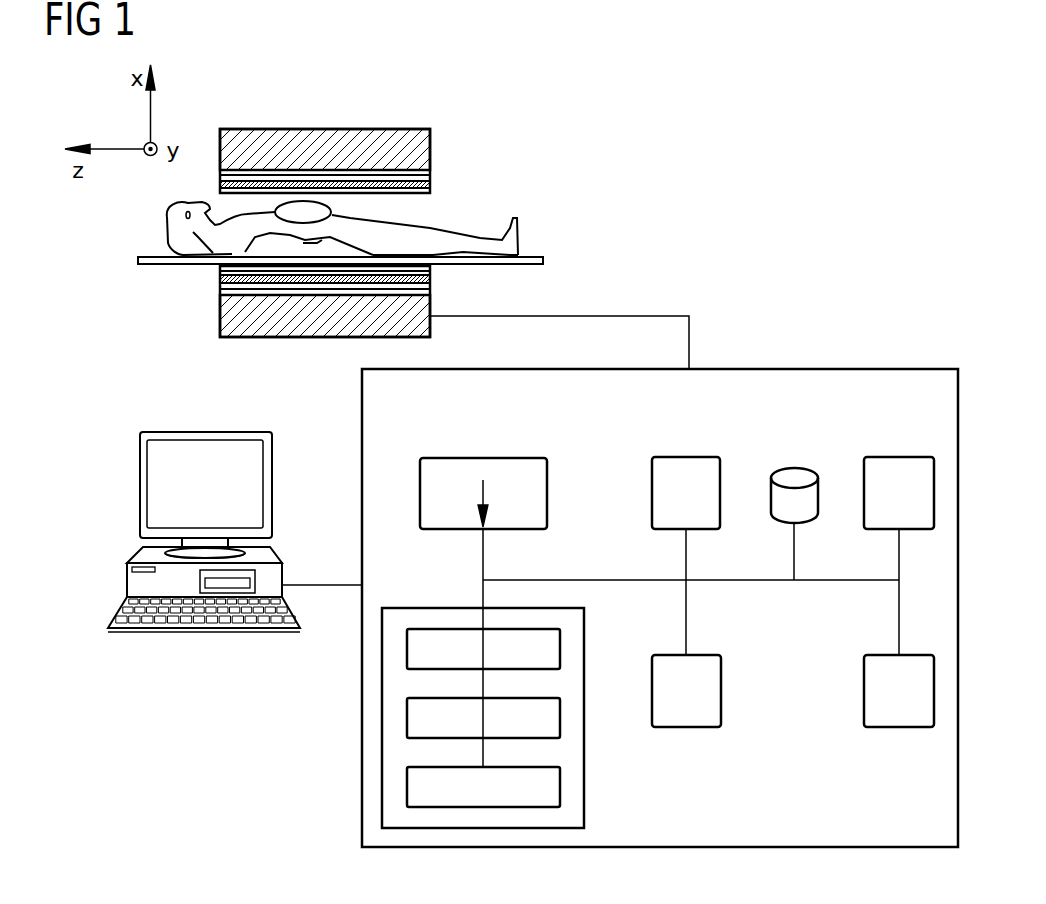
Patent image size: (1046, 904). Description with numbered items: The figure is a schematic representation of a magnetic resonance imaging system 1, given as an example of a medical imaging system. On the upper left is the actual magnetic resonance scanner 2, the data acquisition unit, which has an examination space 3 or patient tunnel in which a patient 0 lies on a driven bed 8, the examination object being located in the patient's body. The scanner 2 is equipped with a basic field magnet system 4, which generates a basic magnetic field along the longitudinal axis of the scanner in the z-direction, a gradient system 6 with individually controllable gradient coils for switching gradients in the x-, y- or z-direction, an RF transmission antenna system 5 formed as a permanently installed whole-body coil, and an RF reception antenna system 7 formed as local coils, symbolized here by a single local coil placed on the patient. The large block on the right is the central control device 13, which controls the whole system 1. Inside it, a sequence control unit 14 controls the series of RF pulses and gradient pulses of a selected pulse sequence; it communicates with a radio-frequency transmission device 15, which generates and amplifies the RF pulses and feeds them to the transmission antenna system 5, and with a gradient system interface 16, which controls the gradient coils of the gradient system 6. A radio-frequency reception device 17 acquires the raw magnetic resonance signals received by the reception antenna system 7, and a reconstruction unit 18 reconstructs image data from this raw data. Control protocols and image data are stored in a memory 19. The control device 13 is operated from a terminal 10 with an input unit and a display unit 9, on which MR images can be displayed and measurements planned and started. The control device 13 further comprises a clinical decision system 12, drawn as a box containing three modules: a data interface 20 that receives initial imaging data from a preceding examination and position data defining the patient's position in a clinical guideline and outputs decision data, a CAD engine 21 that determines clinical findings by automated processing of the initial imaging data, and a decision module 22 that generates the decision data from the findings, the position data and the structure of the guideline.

The magnetic resonance imaging system 1 is at (833, 89).
The magnetic resonance scanner 2 is at (368, 138).
The examination space 3 is at (422, 213).
The basic field magnet system 4 is at (225, 316).
The RF transmission antenna system 5 is at (222, 187).
The gradient system 6 is at (430, 175).
The RF reception antenna system 7 is at (302, 212).
The driven bed 8 is at (543, 261).
The patient 0 is at (517, 243).
The display unit 9 is at (205, 432).
The terminal 10 is at (203, 633).
The clinical decision system 12 is at (435, 607).
The central control device 13 is at (808, 368).
The sequence control unit 14 is at (483, 458).
The radio-frequency transmission device 15 is at (685, 457).
The gradient system interface 16 is at (721, 692).
The radio-frequency reception device 17 is at (899, 457).
The reconstruction unit 18 is at (900, 728).
The memory 19 is at (794, 467).
The data interface 20 is at (562, 650).
The CAD engine 21 is at (562, 718).
The decision module 22 is at (562, 788).